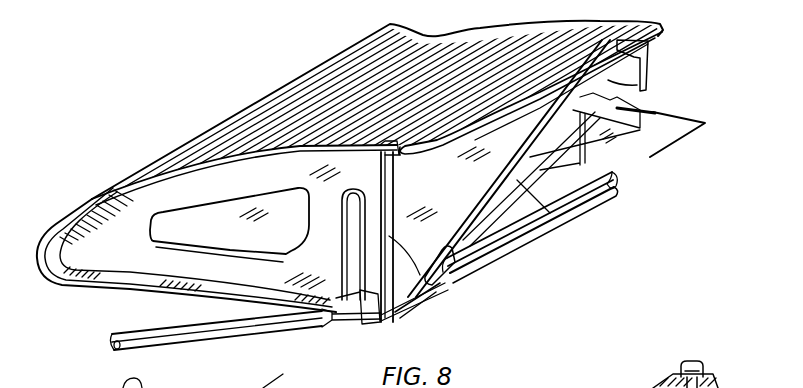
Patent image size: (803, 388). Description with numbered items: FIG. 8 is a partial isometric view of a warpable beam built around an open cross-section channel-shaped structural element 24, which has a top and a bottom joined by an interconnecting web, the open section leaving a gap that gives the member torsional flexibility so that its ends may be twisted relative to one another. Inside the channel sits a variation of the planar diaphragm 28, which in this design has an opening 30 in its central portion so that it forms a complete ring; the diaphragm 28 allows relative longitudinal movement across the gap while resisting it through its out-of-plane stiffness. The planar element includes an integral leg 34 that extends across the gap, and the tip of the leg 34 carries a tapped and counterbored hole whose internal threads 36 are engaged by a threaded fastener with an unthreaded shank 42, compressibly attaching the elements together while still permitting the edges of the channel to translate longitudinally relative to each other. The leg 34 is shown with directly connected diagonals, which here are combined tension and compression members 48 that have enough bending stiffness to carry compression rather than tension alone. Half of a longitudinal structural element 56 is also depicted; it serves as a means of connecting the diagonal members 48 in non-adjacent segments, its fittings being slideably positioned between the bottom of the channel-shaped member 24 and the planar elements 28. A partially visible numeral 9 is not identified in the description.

The channel-shaped structural element 24 is at (163, 153).
The diaphragm 28 is at (249, 155).
The opening 30 is at (148, 213).
The leg 34 is at (647, 63).
The combined tension and compression member 48 is at (137, 334).
The longitudinal structural element 56 is at (496, 260).
The threaded fastener with an unthreaded shank 42 is at (694, 363).
The internal threads 36 is at (662, 376).
The platform 9 is at (585, 129).